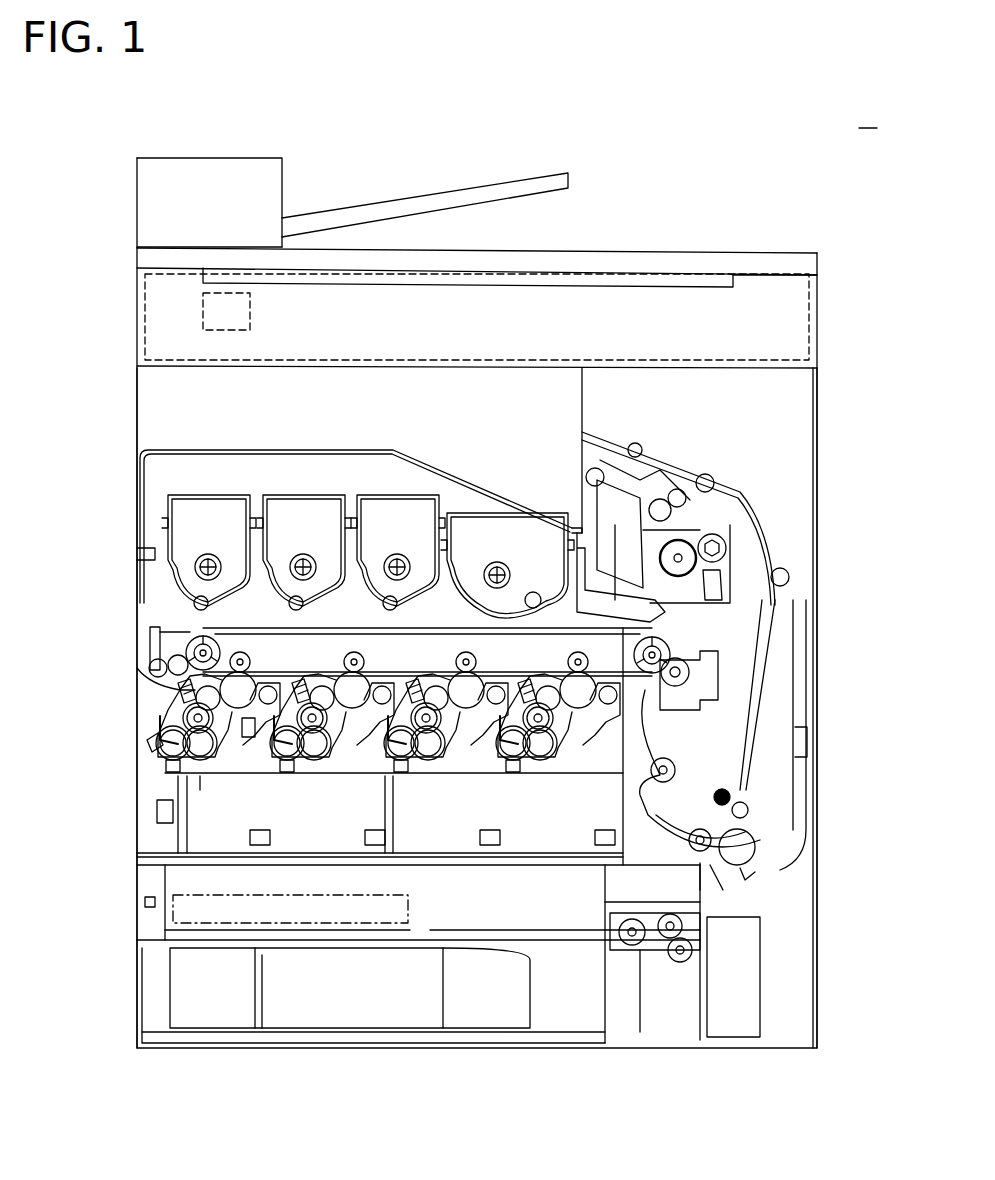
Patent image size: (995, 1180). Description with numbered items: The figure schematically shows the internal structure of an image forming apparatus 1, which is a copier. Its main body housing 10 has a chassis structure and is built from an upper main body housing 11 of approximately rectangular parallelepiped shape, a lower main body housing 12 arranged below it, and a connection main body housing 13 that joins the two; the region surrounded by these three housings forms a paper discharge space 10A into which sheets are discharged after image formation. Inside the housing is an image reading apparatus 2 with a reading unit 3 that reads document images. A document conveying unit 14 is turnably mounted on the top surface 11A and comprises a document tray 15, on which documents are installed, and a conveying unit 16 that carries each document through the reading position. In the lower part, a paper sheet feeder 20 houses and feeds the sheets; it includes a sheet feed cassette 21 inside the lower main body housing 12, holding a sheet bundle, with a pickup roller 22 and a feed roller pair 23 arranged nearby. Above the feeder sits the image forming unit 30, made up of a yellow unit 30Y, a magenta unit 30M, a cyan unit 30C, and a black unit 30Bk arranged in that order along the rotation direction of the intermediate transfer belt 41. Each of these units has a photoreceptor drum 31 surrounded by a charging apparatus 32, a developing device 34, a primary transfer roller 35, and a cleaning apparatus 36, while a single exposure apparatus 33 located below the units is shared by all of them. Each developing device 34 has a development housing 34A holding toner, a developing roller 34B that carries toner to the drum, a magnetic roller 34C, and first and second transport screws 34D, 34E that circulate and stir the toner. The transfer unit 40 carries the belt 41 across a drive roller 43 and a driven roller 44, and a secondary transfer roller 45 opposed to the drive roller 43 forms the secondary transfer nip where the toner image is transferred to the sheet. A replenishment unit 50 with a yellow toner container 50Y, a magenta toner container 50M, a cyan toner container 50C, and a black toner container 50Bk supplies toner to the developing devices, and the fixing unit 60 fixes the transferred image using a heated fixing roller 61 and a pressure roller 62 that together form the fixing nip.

The image forming apparatus 1 is at (796, 145).
The image reading apparatus 2 is at (137, 295).
The reading unit 3 is at (203, 318).
The main body housing 10 is at (834, 390).
The paper discharge space 10A is at (160, 390).
The upper main body housing 11 is at (818, 315).
The top surface 11A is at (781, 275).
The lower main body housing 12 is at (818, 782).
The connection main body housing 13 is at (818, 443).
The document conveying unit 14 is at (175, 208).
The document tray 15 is at (400, 207).
The conveying unit 16 is at (213, 185).
The paper sheet feeder 20 is at (130, 944).
The sheet feed cassette 21 is at (137, 1005).
The pickup roller 22 is at (630, 946).
The feed roller pair 23 is at (686, 962).
The image forming unit 30 is at (130, 758).
The yellow unit 30Y is at (148, 765).
The magenta unit 30M is at (305, 762).
The cyan unit 30C is at (452, 762).
The black unit 30Bk is at (563, 762).
The photoreceptor drum 31 is at (250, 672).
The charging apparatus 32 is at (224, 730).
The exposure apparatus 33 is at (157, 814).
The developing device 34 is at (196, 703).
The development housing 34A is at (170, 740).
The developing roller 34B is at (190, 690).
The magnetic roller 34C is at (187, 718).
The first transport screw 34D is at (160, 790).
The second transport screw 34E is at (204, 778).
The primary transfer roller 35 is at (210, 638).
The cleaning apparatus 36 is at (251, 662).
The transfer unit 40 is at (158, 608).
The intermediate transfer belt 41 is at (332, 676).
The drive roller 43 is at (658, 695).
The driven roller 44 is at (190, 690).
The secondary transfer roller 45 is at (690, 672).
The replenishment unit 50 is at (158, 497).
The yellow toner container 50Y is at (210, 495).
The magenta toner container 50M is at (307, 495).
The cyan toner container 50C is at (396, 495).
The black toner container 50Bk is at (477, 513).
The fixing unit 60 is at (724, 526).
The fixing roller 61 is at (690, 578).
The pressure roller 62 is at (727, 548).